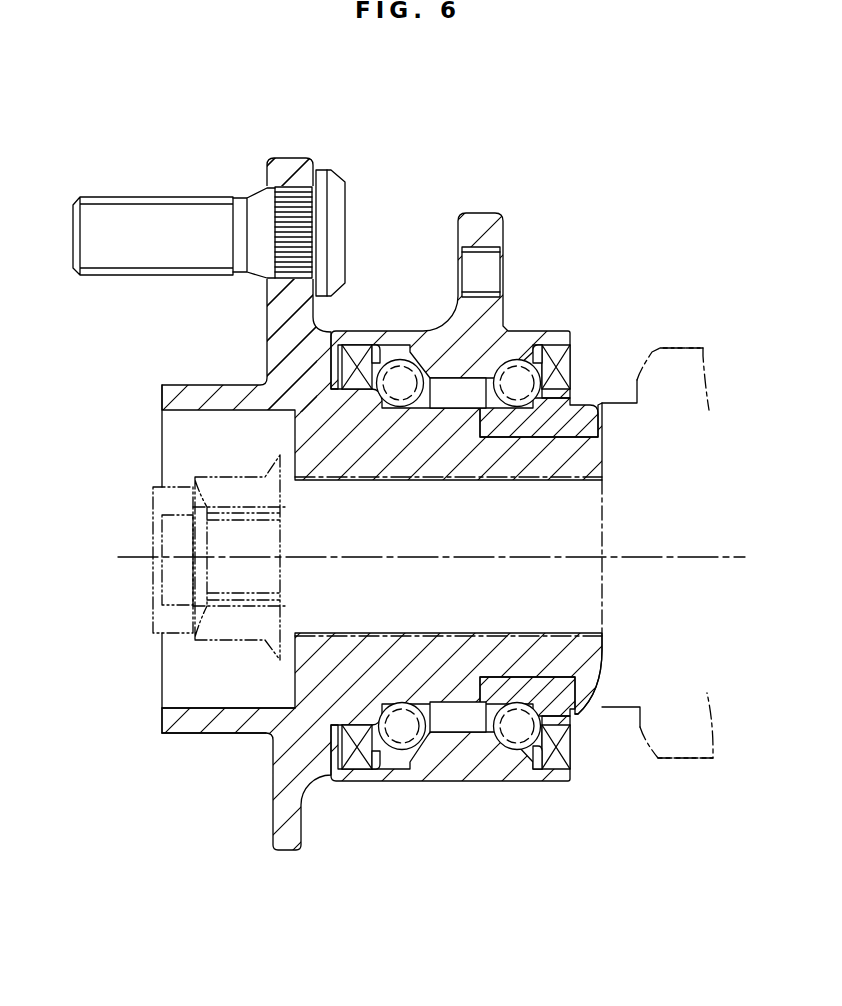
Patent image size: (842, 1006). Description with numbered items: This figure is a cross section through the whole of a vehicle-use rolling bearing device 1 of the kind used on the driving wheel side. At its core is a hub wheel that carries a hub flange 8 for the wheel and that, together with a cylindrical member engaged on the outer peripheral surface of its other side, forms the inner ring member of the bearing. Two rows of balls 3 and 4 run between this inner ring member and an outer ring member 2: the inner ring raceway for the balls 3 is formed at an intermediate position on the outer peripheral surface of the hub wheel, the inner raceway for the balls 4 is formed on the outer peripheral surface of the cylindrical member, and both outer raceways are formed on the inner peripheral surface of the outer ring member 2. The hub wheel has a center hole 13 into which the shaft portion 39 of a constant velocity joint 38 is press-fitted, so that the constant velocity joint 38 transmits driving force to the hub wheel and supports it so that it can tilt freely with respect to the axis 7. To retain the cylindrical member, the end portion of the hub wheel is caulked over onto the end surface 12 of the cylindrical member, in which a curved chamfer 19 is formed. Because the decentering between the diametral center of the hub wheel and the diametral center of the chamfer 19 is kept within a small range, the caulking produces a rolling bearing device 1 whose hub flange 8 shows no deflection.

The rolling bearing device 1 is at (496, 498).
The outer ring member 2 is at (437, 772).
The balls 3 is at (411, 359).
The balls 4 is at (516, 359).
The axis 7 is at (667, 553).
The hub flange 8 is at (280, 158).
The end surface 12 is at (577, 717).
The center hole 13 is at (455, 528).
The curved chamfer 19 is at (604, 667).
The constant velocity joint 38 is at (690, 346).
The shaft portion 39 is at (448, 610).